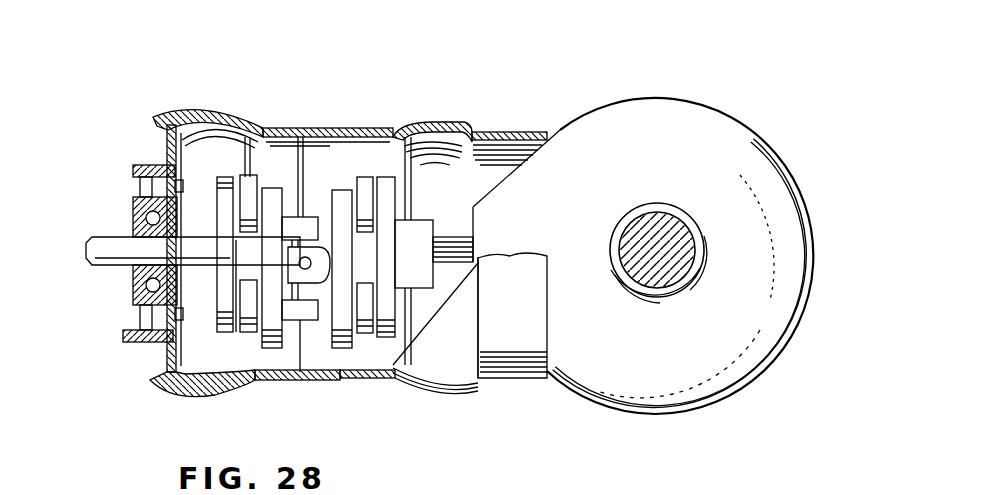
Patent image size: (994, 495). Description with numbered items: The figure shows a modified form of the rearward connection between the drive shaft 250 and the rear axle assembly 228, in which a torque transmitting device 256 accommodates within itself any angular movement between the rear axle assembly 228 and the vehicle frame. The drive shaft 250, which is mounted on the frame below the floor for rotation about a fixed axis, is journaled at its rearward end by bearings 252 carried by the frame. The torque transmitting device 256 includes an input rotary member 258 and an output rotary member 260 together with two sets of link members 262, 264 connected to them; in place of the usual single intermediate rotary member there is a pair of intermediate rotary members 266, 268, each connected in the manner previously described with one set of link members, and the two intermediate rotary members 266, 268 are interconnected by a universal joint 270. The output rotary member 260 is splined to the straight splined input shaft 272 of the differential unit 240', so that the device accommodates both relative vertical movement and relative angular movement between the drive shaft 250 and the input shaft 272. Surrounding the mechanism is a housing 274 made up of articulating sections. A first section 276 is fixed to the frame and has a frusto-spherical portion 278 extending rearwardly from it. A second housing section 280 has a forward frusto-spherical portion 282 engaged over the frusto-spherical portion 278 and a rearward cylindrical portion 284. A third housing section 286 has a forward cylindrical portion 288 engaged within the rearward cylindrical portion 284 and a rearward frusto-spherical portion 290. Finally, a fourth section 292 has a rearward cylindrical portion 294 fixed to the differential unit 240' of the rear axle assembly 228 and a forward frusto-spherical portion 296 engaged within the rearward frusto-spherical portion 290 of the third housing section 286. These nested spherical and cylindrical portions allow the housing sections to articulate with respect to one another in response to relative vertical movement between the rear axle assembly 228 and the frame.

The rear axle assembly 228 is at (724, 106).
The differential unit 240' is at (685, 273).
The drive shaft 250 is at (113, 219).
The bearings 252 is at (135, 310).
The torque transmitting device 256 is at (320, 180).
The input rotary member 258 is at (233, 332).
The output rotary member 260 is at (388, 208).
The link members 262 is at (250, 207).
The link members 264 is at (368, 220).
The intermediate rotary member 266 is at (268, 196).
The intermediate rotary member 268 is at (342, 196).
The universal joint 270 is at (302, 330).
The input shaft 272 is at (463, 246).
The housing 274 is at (512, 130).
The first section 276 is at (164, 146).
The frusto-spherical portion 278 is at (208, 120).
The second housing section 280 is at (260, 388).
The forward frusto-spherical portion 282 is at (170, 397).
The rearward cylindrical portion 284 is at (287, 124).
The third housing section 286 is at (437, 392).
The forward cylindrical portion 288 is at (357, 376).
The rearward frusto-spherical portion 290 is at (435, 122).
The fourth section 292 is at (528, 382).
The rearward cylindrical portion 294 is at (543, 135).
The forward frusto-spherical portion 296 is at (450, 128).